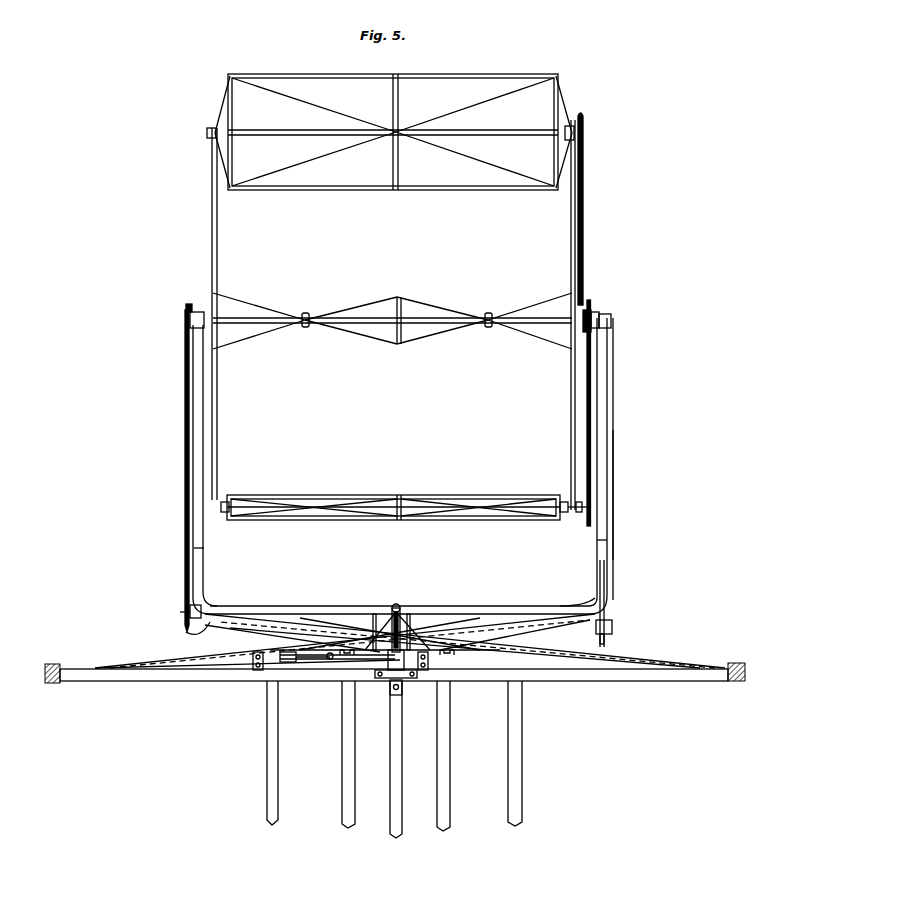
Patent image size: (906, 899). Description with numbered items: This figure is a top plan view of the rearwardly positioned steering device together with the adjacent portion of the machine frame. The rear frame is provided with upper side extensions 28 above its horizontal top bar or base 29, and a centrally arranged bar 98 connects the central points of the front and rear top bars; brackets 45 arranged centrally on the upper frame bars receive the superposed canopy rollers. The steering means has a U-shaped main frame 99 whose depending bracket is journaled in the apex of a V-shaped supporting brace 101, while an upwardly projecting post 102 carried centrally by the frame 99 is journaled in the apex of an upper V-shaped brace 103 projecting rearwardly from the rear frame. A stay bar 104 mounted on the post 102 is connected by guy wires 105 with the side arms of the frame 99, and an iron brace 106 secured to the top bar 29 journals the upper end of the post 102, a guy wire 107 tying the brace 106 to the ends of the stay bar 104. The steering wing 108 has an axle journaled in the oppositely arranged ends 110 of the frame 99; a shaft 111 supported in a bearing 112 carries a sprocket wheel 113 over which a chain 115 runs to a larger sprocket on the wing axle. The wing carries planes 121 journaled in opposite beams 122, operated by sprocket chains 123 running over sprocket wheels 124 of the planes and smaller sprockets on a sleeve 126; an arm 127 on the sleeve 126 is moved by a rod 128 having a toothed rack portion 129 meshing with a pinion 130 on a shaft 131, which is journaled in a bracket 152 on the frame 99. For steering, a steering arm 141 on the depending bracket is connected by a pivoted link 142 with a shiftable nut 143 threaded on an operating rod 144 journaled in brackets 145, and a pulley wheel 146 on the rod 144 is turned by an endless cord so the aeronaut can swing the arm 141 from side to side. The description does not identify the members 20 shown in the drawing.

The legs 20 is at (342, 750).
The upper side extensions 28 is at (52, 664).
The top bar 29 is at (586, 681).
The brackets 45 is at (384, 680).
The central bar 98 is at (402, 774).
The U-shaped main frame 99 is at (614, 372).
The V-shaped supporting brace 101 is at (198, 672).
The post 102 is at (395, 604).
The upper V-shaped brace 103 is at (520, 323).
The stay bar 104 is at (306, 616).
The guy wires 105 is at (205, 556).
The iron brace 106 is at (404, 628).
The guy wire 107 is at (250, 630).
The steering wing 108 is at (189, 284).
The ends of the steering bracket 110 is at (612, 320).
The shaft 111 is at (190, 626).
The bearing 112 is at (189, 610).
The sprocket wheel 113 is at (183, 613).
The chain 115 is at (184, 448).
The planes 121 is at (560, 78).
The beams 122 is at (214, 222).
The sprocket chains 123 is at (584, 188).
The sprocket wheels 124 is at (575, 524).
The sleeve 126 is at (588, 312).
The arm 127 is at (597, 314).
The rod 128 is at (614, 476).
The toothed rack portion 129 is at (606, 606).
The pinion 130 is at (612, 624).
The shaft 131 is at (590, 602).
The steering arm 141 is at (382, 642).
The pivoted link 142 is at (336, 660).
The shiftable nut 143 is at (298, 662).
The operating rod 144 is at (282, 658).
The brackets 145 is at (256, 670).
The pulley wheel 146 is at (385, 646).
The bracket 152 is at (375, 620).